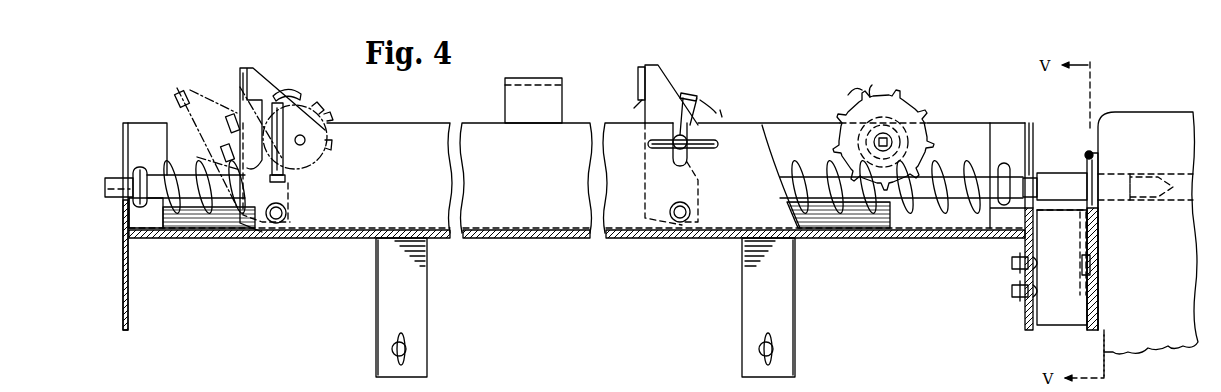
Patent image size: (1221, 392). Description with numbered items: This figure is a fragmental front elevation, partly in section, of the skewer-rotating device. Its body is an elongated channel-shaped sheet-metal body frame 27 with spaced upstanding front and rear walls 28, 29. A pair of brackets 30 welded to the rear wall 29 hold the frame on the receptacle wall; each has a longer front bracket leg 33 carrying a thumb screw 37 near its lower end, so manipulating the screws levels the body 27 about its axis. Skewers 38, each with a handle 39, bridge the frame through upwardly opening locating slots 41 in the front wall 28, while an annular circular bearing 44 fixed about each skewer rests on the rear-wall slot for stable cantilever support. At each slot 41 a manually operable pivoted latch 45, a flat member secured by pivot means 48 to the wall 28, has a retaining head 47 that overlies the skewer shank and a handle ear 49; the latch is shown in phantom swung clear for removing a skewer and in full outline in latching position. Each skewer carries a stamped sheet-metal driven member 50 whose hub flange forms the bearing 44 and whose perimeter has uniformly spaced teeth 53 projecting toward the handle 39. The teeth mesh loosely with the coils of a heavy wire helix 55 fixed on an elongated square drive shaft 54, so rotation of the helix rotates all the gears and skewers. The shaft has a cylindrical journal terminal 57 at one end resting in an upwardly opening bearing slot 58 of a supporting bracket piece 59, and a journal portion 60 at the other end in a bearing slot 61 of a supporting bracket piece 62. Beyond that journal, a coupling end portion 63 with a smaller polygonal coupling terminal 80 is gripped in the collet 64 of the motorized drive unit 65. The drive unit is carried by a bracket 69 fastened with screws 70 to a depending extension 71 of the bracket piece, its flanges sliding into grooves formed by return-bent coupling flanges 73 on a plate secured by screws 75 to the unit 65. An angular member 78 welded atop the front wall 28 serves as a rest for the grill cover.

The body frame 27 is at (447, 241).
The front wall 28 is at (605, 122).
The rear wall 29 is at (793, 122).
The bracket 30 is at (725, 295).
The front bracket leg 33 is at (785, 292).
The thumb screw 37 is at (805, 349).
The skewer 38 is at (938, 152).
The handle 39 is at (630, 147).
The locating slot 41 is at (687, 162).
The annular circular bearing 44 is at (877, 128).
The pivoted latch 45 is at (625, 86).
The retaining head 47 is at (689, 86).
The pivot means 48 is at (672, 243).
The handle ear 49 is at (636, 52).
The driven member 50 is at (928, 88).
The teeth 53 is at (870, 97).
The drive shaft 54 is at (200, 200).
The helix 55 is at (232, 205).
The journal terminal 57 is at (112, 197).
The bearing slot 58 is at (124, 172).
The supporting bracket piece 59 is at (122, 222).
The journal portion 60 is at (1035, 188).
The bearing slot 61 is at (1024, 160).
The supporting bracket piece 62 is at (1033, 133).
The coupling end portion 63 is at (1060, 173).
The collet 64 is at (1098, 167).
The motorized drive unit 65 is at (1140, 112).
The bracket 69 is at (1072, 325).
The screws 70 is at (1012, 263).
The depending extension 71 is at (1018, 320).
The coupling flanges 73 is at (1086, 152).
The screws 75 is at (1098, 268).
The angular member 78 is at (534, 86).
The coupling terminal 80 is at (1160, 175).